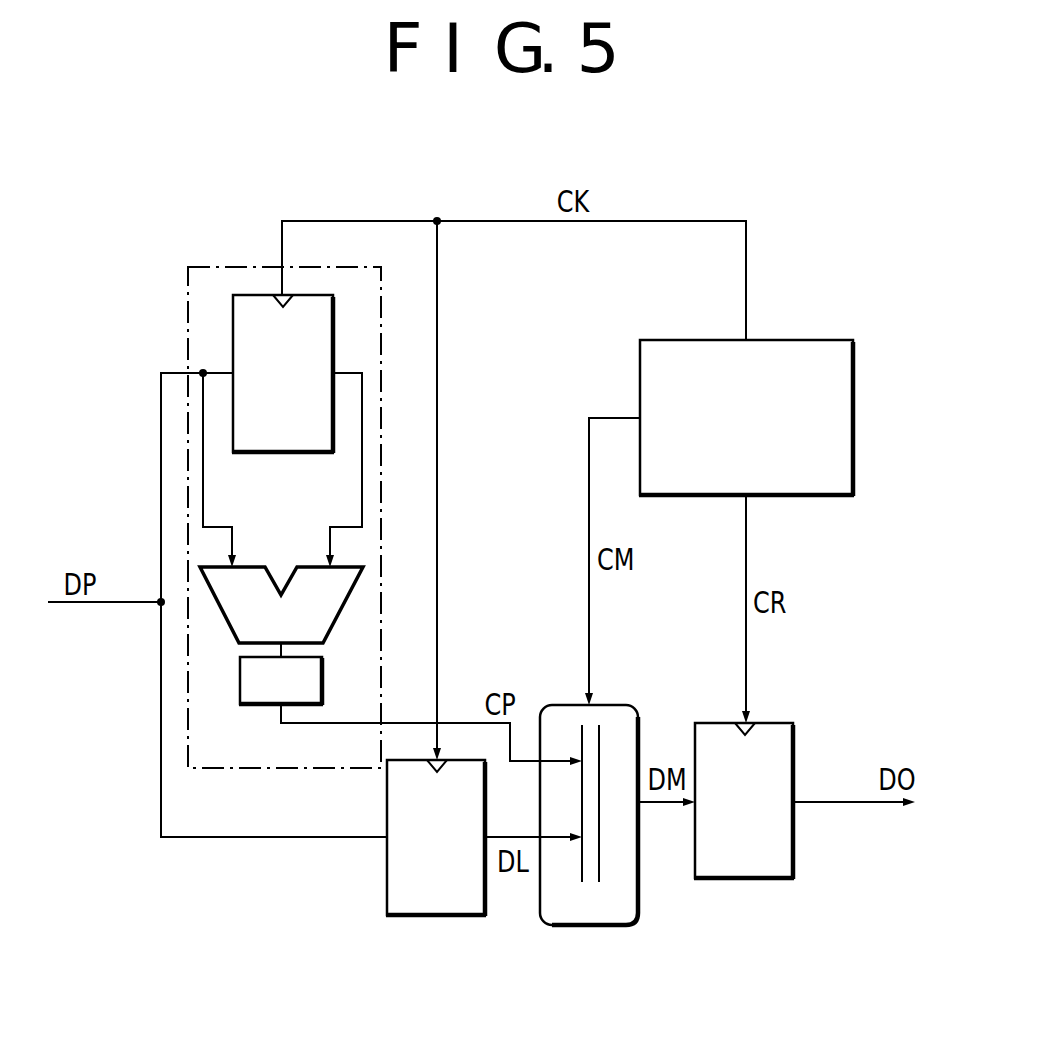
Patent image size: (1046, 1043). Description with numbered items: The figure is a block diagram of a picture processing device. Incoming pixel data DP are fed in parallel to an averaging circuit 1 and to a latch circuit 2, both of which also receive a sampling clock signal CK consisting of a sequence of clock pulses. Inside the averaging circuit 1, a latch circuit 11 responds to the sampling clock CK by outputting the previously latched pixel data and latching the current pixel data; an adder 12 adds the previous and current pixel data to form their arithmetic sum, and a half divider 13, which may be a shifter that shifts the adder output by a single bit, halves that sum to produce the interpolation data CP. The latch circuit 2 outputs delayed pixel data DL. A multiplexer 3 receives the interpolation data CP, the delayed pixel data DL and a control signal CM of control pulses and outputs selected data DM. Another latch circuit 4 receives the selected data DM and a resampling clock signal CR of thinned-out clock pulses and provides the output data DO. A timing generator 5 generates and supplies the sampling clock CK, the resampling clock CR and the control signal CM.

The averaging circuit 1 is at (222, 262).
The latch circuit 11 is at (233, 330).
The adder 12 is at (225, 617).
The half divider 13 is at (240, 678).
The latch circuit 2 is at (427, 915).
The multiplexer 3 is at (577, 925).
The latch circuit 4 is at (747, 878).
The timing generator 5 is at (813, 340).